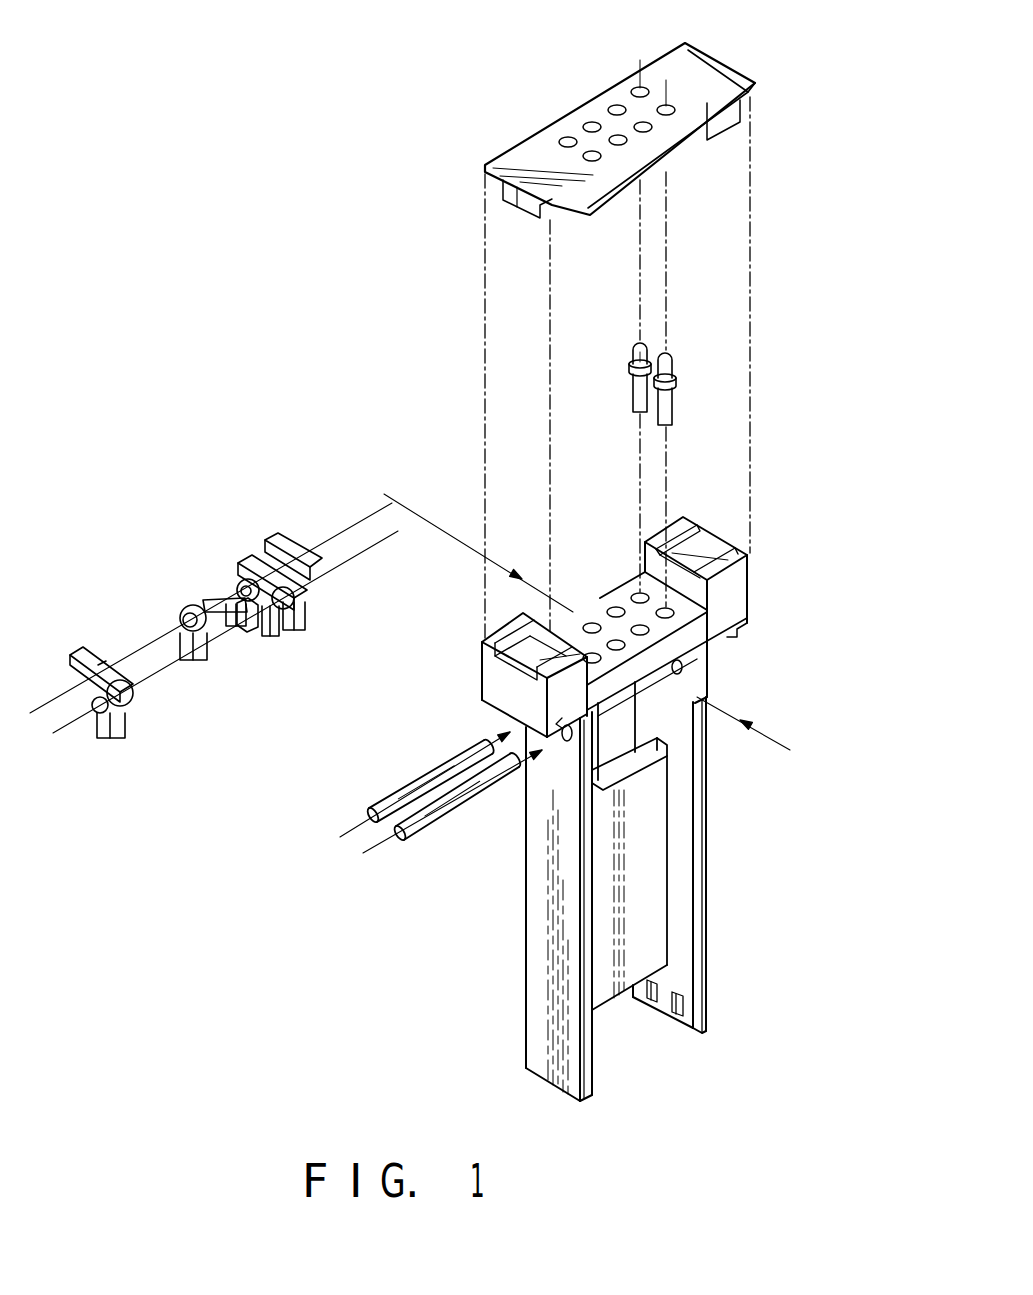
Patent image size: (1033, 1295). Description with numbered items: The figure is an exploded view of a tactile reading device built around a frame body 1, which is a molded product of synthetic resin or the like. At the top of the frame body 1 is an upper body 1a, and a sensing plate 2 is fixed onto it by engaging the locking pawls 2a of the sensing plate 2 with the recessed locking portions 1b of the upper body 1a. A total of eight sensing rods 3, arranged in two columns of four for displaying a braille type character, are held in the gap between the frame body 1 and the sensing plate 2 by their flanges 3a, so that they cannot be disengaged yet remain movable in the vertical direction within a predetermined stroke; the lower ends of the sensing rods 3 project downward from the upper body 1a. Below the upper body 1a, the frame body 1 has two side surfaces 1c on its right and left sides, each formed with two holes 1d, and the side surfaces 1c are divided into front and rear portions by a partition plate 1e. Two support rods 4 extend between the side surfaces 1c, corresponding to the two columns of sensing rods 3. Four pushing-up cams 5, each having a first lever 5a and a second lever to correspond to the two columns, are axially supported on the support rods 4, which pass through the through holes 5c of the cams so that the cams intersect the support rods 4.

The frame body 1 is at (468, 888).
The upper body 1a is at (735, 630).
The recessed locking portions 1b is at (708, 535).
The side surfaces 1c is at (708, 852).
The holes 1d is at (684, 670).
The partition plate 1e is at (652, 935).
The sensing plate 2 is at (530, 152).
The locking pawls 2a is at (752, 100).
The sensing rods 3 is at (632, 392).
The flanges 3a is at (632, 365).
The support rods 4 is at (420, 778).
The pushing-up cams 5 is at (287, 547).
The first lever 5a is at (120, 728).
The through holes 5c is at (90, 720).